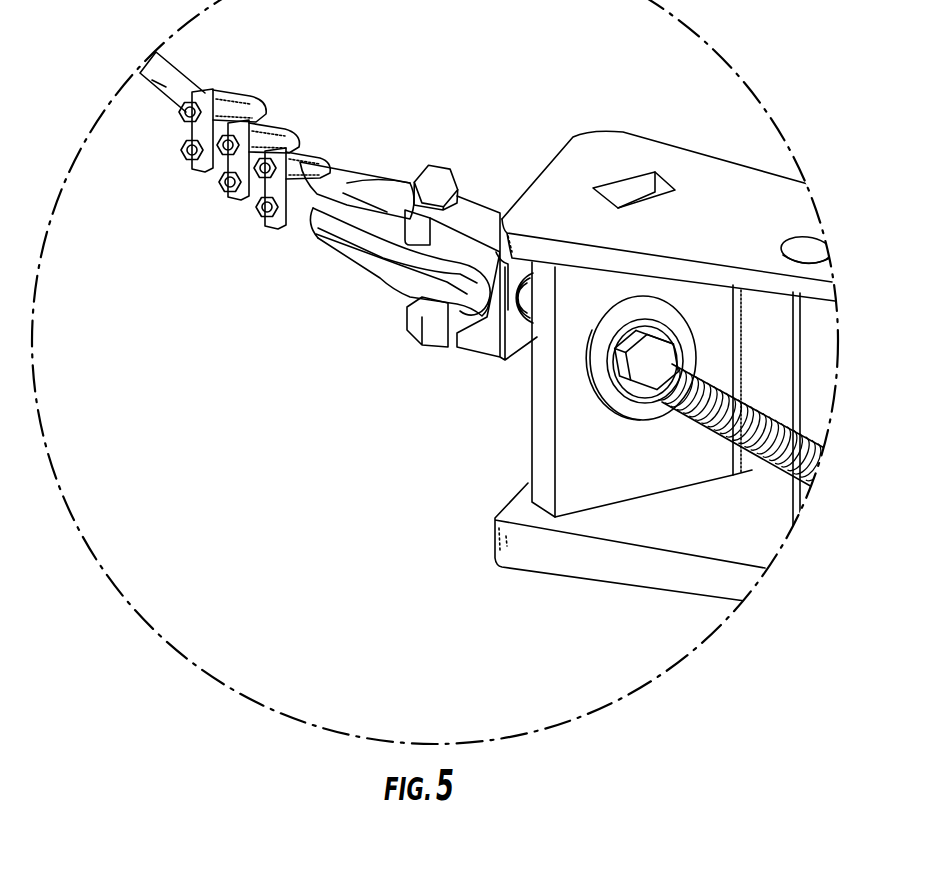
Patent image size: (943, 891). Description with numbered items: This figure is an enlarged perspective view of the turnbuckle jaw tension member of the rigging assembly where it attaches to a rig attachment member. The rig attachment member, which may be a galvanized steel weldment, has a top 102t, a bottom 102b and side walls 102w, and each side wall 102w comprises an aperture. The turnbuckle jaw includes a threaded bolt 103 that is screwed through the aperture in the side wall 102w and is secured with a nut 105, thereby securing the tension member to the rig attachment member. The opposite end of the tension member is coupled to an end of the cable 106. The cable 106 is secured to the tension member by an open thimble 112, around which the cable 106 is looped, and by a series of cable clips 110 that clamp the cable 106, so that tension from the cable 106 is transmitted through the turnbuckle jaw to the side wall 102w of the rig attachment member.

The cable 106 is at (153, 90).
The cable clips 110 is at (222, 187).
The open thimbles 112 is at (342, 267).
The top 102t is at (711, 224).
The side walls 102w is at (595, 465).
The bottom 102b is at (652, 536).
The nut 105 is at (688, 357).
The threaded bolt 103 is at (746, 452).